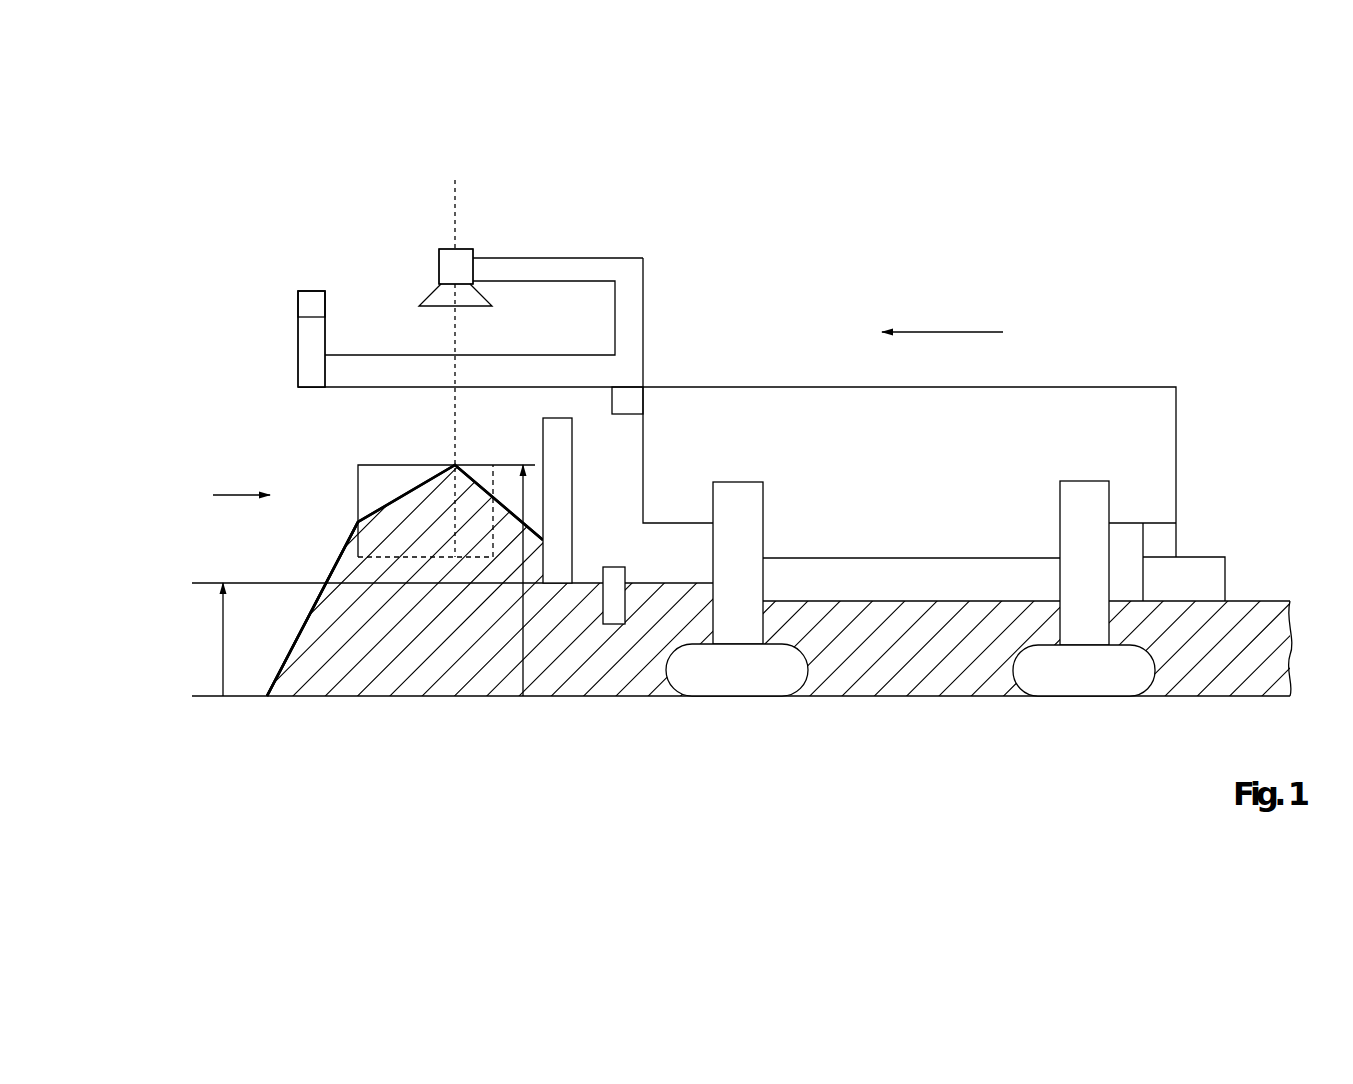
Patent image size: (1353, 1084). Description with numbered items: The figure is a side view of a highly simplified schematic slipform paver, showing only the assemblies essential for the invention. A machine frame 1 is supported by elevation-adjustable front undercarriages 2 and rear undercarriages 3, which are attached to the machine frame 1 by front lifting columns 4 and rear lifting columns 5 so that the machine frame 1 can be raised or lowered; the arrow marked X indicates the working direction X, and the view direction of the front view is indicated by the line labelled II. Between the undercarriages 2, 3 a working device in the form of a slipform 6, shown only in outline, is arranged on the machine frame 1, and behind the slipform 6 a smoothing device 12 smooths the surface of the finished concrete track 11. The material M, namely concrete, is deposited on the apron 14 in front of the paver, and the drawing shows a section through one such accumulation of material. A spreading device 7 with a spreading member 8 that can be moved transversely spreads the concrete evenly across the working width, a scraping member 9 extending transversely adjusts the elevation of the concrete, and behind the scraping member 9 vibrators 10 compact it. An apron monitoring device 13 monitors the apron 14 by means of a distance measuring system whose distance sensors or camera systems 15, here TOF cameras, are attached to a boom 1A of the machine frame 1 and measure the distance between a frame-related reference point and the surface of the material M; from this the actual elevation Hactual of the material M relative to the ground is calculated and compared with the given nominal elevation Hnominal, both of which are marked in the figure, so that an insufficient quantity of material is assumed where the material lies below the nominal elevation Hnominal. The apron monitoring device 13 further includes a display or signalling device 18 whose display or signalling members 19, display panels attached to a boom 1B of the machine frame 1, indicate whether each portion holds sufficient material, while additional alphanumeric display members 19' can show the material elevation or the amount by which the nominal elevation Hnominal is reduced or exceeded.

The machine frame 1 is at (1200, 412).
The boom 1A is at (567, 258).
The boom 1B is at (568, 355).
The front undercarriage 2 is at (742, 686).
The rear undercarriage 3 is at (1083, 683).
The front lifting column 4 is at (765, 518).
The rear lifting column 5 is at (1060, 515).
The slipform 6 is at (922, 558).
The spreading device 7 is at (330, 453).
The spreading member 8 is at (413, 465).
The scraping member 9 is at (575, 460).
The vibrators 10 is at (615, 567).
The concrete track 11 is at (1272, 601).
The smoothing device 12 is at (1205, 557).
The apron monitoring device 13 is at (373, 273).
The apron 14 is at (402, 658).
The distance sensor or camera system 15 is at (473, 250).
The display or signalling device 18 is at (313, 275).
The display or signalling member 19 is at (279, 339).
The alphanumeric display member 19' is at (277, 309).
The material M is at (320, 576).
The working direction X is at (945, 332).
The viewing direction II is at (243, 495).
The nominal elevation Hnominal is at (223, 645).
The actual elevation Hactual is at (523, 645).